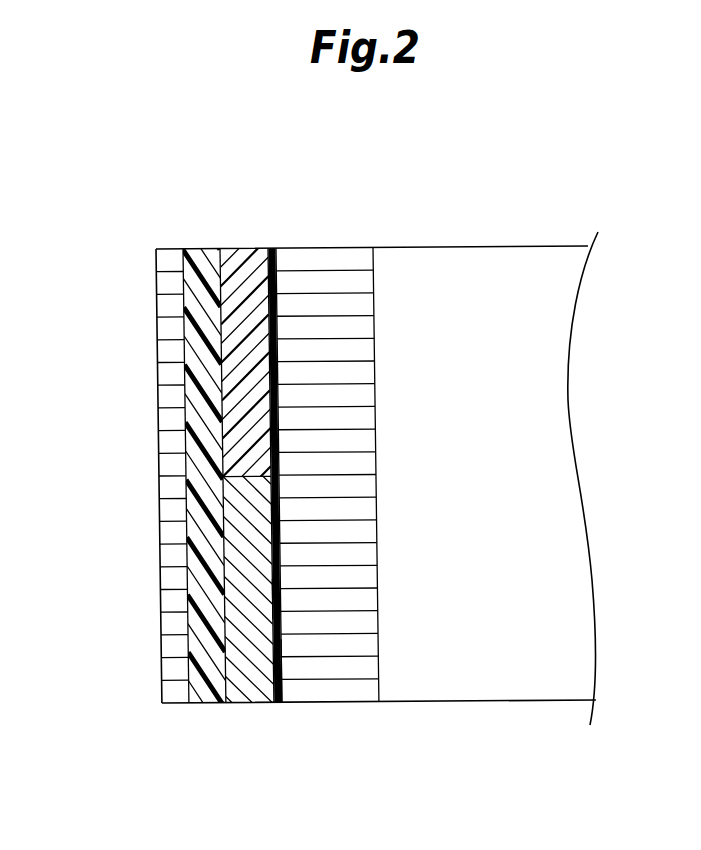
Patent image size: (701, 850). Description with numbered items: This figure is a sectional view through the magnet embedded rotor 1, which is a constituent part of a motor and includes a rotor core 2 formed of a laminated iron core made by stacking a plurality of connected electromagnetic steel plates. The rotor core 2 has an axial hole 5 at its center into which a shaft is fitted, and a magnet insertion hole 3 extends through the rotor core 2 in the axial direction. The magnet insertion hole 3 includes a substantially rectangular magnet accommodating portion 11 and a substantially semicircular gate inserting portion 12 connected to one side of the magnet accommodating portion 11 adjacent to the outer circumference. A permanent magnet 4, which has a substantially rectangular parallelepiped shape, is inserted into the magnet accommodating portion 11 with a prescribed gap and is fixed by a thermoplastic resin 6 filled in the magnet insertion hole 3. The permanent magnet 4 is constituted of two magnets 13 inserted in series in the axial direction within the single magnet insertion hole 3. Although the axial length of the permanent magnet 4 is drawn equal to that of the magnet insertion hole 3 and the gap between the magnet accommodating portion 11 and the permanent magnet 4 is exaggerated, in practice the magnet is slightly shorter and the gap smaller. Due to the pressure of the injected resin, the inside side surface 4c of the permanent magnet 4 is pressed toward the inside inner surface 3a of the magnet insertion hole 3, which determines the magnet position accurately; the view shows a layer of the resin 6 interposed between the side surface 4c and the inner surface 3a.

The magnet embedded rotor 1 is at (430, 171).
The rotor core 2 is at (165, 310).
The magnet insertion hole 3 is at (247, 483).
The inside inner surface 3a is at (272, 603).
The permanent magnet 4 is at (138, 465).
The inside side surface 4c is at (287, 657).
The axial hole 5 is at (375, 287).
The resin 6 is at (220, 285).
The magnet accommodating portion 11 is at (268, 688).
The gate inserting portion 12 is at (190, 675).
The magnet 13 is at (183, 394).